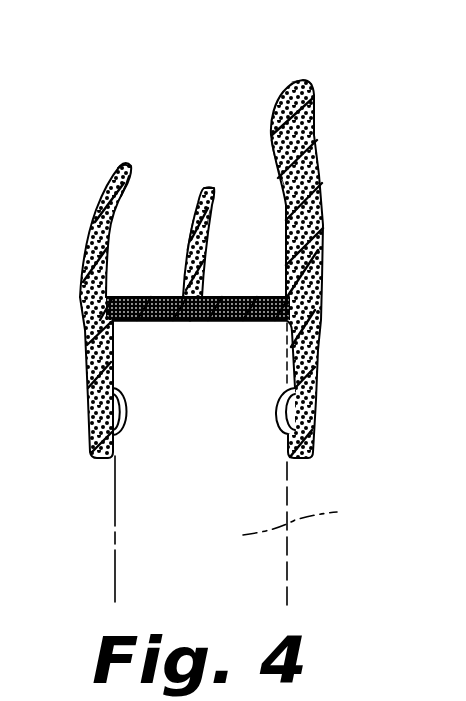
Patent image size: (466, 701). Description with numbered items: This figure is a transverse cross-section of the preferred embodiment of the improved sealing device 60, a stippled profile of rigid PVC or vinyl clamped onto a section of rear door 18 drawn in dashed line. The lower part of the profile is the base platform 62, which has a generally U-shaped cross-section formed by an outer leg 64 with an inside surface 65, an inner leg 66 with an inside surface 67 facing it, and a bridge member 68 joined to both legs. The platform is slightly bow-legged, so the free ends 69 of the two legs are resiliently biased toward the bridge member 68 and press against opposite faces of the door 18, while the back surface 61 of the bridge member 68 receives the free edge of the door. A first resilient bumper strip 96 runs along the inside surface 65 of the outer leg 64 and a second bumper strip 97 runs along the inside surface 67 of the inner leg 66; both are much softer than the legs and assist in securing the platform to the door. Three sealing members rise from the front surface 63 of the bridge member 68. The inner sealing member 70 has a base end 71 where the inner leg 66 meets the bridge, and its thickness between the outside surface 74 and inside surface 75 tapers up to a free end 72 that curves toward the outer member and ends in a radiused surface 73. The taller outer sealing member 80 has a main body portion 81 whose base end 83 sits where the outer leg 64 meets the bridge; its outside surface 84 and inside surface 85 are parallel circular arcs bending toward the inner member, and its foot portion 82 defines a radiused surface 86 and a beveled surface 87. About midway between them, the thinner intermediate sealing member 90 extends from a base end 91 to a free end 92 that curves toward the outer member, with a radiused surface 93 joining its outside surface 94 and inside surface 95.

The improved sealing device 60 is at (158, 72).
The back surface 61 is at (215, 322).
The base platform 62 is at (252, 424).
The front surface 63 is at (126, 297).
The outer leg 64 is at (316, 375).
The inside surface 65 is at (313, 343).
The inner leg 66 is at (91, 414).
The inside surface 67 is at (113, 334).
The bridge member 68 is at (250, 321).
The free ends 69 is at (98, 458).
The inner sealing member 70 is at (85, 240).
The base end 71 is at (85, 314).
The free end 72 is at (110, 176).
The radiused surface 73 is at (126, 164).
The outside surface 74 is at (100, 203).
The inside surface 75 is at (128, 172).
The outer sealing member 80 is at (314, 185).
The main body portion 81 is at (312, 255).
The foot portion 82 is at (315, 100).
The base end 83 is at (318, 314).
The outside surface 84 is at (314, 128).
The inside surface 85 is at (277, 168).
The radiused surface 86 is at (303, 81).
The beveled surface 87 is at (280, 100).
The intermediate sealing member 90 is at (201, 251).
The base end 91 is at (214, 297).
The free end 92 is at (212, 189).
The radiused surface 93 is at (210, 186).
The outside surface 94 is at (184, 236).
The inside surface 95 is at (208, 226).
The first bumper strip 96 is at (282, 430).
The second bumper strip 97 is at (127, 412).
The rear door 18 is at (312, 519).